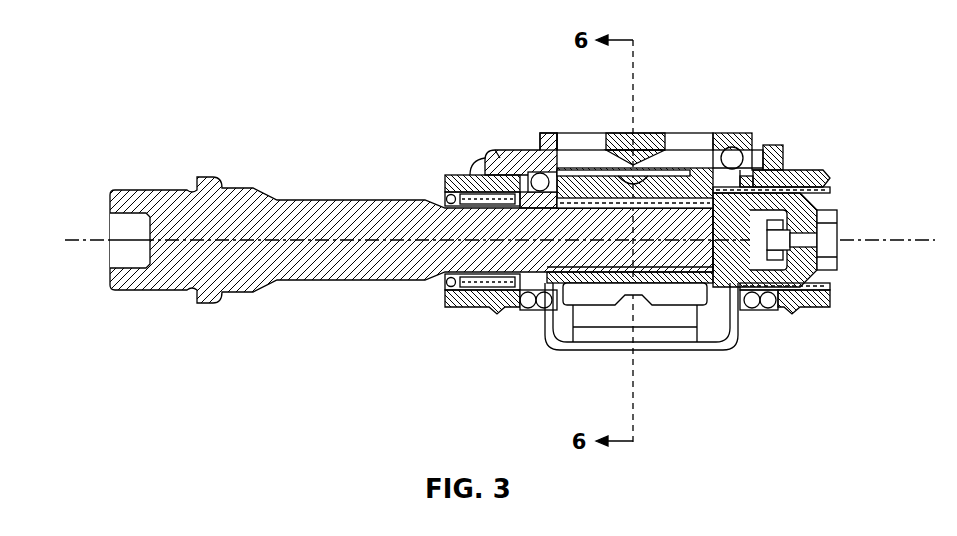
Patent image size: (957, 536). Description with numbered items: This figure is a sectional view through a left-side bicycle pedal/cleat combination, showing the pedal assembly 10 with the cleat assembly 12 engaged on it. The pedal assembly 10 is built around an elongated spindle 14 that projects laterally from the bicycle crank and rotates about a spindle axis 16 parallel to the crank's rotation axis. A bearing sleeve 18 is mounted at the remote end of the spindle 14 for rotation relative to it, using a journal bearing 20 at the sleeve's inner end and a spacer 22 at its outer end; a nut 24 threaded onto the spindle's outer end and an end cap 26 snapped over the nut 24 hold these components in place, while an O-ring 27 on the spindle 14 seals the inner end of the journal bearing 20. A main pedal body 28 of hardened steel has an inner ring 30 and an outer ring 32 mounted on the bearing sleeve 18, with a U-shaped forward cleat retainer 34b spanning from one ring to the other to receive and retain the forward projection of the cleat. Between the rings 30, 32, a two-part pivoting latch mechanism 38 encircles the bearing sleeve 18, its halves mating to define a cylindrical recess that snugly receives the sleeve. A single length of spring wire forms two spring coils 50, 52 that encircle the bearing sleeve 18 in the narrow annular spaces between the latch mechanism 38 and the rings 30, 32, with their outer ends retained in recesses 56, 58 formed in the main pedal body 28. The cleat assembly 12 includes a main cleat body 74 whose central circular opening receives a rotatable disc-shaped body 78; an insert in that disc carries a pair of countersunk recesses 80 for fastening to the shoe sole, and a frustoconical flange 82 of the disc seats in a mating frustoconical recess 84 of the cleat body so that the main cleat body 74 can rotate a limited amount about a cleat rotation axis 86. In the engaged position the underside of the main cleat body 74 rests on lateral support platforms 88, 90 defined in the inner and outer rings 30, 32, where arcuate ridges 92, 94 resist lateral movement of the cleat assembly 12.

The pedal assembly 10 is at (382, 380).
The cleat assembly 12 is at (484, 105).
The spindle 14 is at (295, 290).
The spindle axis 16 is at (102, 230).
The bearing sleeve 18 is at (690, 295).
The journal bearing 20 is at (460, 308).
The spacer 22 is at (818, 307).
The nut 24 is at (840, 246).
The end cap 26 is at (838, 191).
The O-ring 27 is at (445, 283).
The main pedal body 28 is at (822, 167).
The inner ring 30 is at (445, 176).
The outer ring 32 is at (813, 170).
The U-shaped forward cleat retainer 34b is at (632, 343).
The pivoting latch mechanism 38 is at (551, 344).
The spring coil 50 is at (524, 307).
The spring coil 52 is at (748, 314).
The recess 56 is at (494, 150).
The recess 58 is at (745, 135).
The main cleat body 74 is at (538, 132).
The disc-shaped body 78 is at (631, 133).
The countersunk recesses 80 is at (590, 133).
The frustoconical flange 82 is at (717, 131).
The frustoconical recess 84 is at (542, 140).
The cleat rotation axis 86 is at (648, 246).
The lateral support platform 88 is at (500, 156).
The lateral support platform 90 is at (781, 150).
The arcuate ridge 92 is at (468, 152).
The arcuate ridge 94 is at (797, 172).